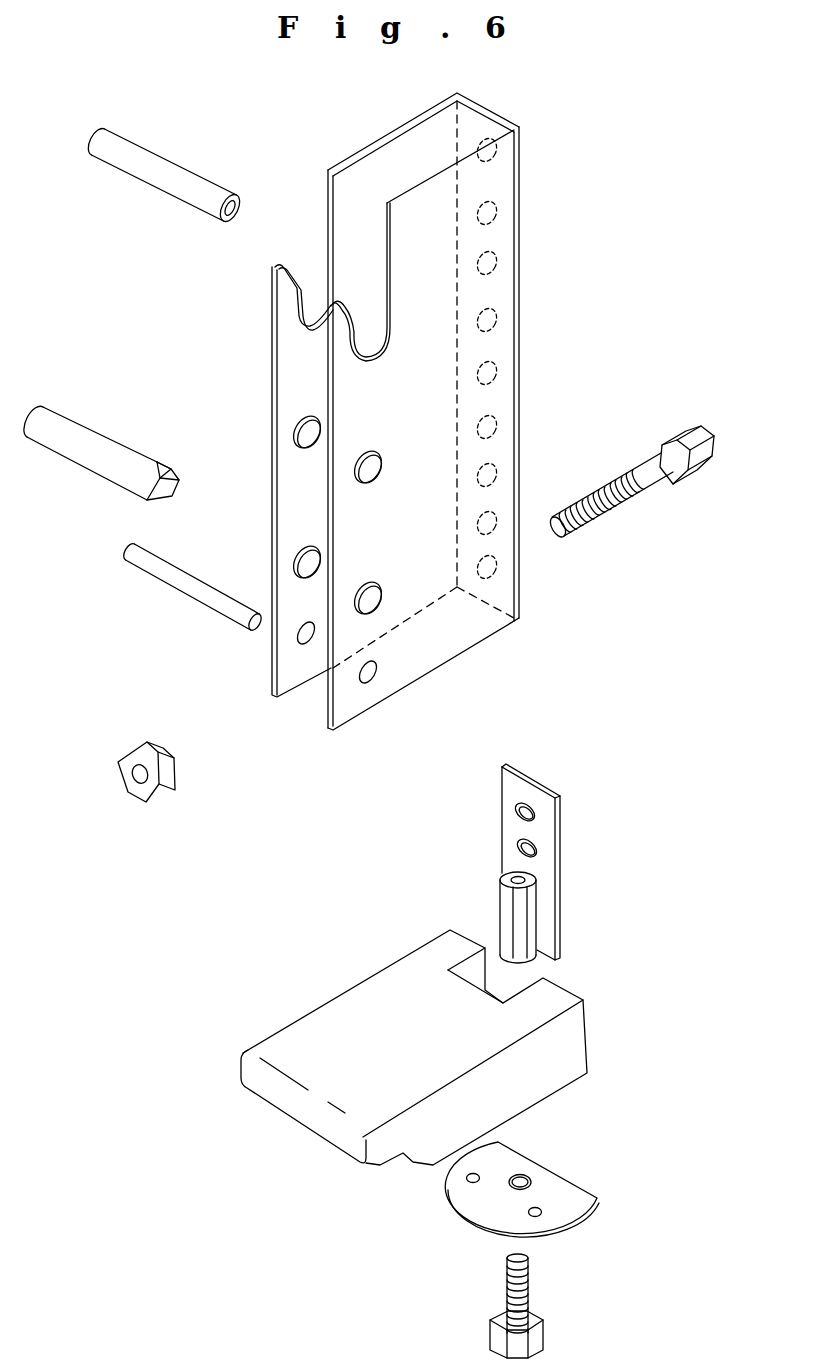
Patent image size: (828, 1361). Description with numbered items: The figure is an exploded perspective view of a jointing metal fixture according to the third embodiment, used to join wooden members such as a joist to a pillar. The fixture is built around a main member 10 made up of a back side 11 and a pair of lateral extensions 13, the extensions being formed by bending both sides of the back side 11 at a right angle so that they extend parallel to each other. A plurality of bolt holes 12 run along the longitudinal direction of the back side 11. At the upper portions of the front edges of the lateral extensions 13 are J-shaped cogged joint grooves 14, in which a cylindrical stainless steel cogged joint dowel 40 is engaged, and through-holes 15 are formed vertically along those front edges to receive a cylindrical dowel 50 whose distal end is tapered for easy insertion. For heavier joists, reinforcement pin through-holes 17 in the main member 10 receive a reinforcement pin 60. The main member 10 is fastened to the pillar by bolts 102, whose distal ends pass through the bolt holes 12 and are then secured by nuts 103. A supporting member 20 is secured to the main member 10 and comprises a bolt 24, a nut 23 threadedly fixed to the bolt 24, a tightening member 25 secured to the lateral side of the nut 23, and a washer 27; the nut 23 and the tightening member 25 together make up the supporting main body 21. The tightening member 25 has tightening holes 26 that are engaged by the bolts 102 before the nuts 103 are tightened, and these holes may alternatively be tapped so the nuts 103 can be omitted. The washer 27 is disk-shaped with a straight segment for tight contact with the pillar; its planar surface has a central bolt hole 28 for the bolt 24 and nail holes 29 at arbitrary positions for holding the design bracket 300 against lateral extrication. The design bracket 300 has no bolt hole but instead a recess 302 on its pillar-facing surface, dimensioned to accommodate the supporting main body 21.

The main member 10 is at (434, 457).
The back side 11 is at (497, 113).
The bolt holes 12 is at (497, 212).
The lateral extensions 13 is at (343, 690).
The J-shaped cogged joint grooves 14 is at (389, 343).
The through-holes 15 is at (376, 483).
The reinforcement pin through-holes 17 is at (363, 683).
The supporting member 20 is at (506, 863).
The supporting main body 21 is at (512, 907).
The nut 23 is at (530, 902).
The bolt 24 is at (543, 1318).
The tightening member 25 is at (545, 930).
The tightening holes 26 is at (528, 810).
The washer 27 is at (492, 1181).
The central bolt hole 28 is at (527, 1175).
The nail holes 29 is at (470, 1179).
The cogged joint dowel 40 is at (120, 168).
The dowel 50 is at (100, 470).
The reinforcement pin 60 is at (168, 578).
The bolts 102 is at (622, 508).
The nuts 103 is at (157, 793).
The design bracket 300 is at (433, 1047).
The recess 302 is at (500, 992).